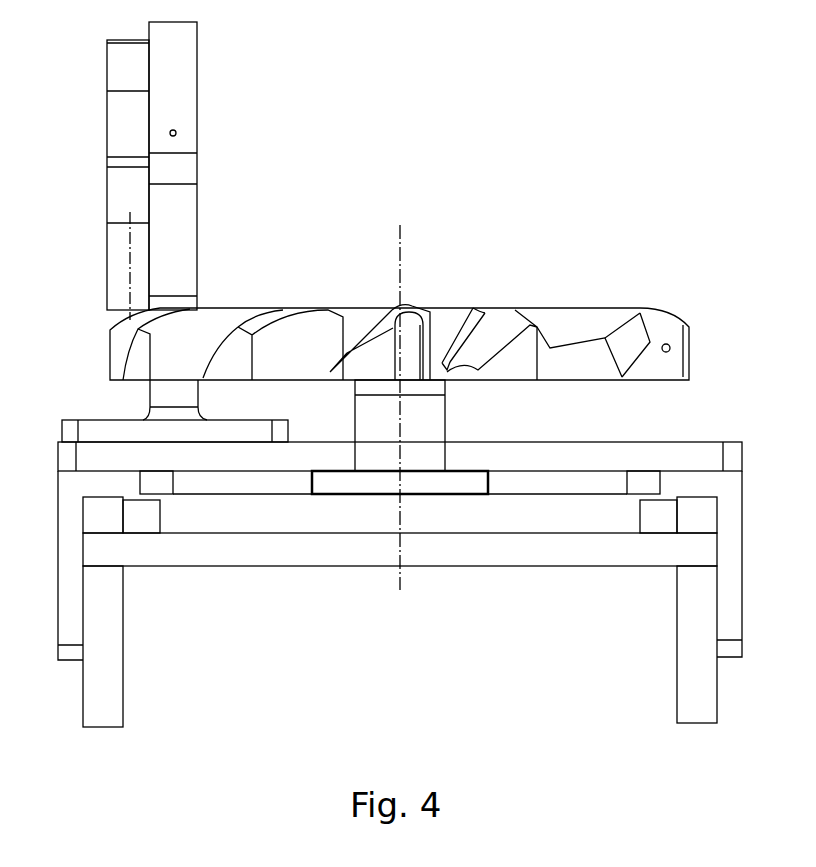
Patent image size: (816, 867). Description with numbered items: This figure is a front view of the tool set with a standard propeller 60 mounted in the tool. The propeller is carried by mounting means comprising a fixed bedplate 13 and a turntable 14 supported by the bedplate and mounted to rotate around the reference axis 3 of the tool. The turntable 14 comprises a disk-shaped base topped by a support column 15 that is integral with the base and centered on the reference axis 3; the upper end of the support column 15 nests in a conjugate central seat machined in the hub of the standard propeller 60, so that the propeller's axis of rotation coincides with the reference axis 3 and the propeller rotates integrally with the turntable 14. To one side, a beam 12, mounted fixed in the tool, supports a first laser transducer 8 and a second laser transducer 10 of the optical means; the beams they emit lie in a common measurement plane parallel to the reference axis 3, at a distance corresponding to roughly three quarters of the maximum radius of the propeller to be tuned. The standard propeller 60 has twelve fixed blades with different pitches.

The reference axis 3 is at (398, 248).
The first laser transducer 8 is at (122, 131).
The second laser transducer 10 is at (118, 272).
The beam 12 is at (185, 70).
The fixed bedplate 13 is at (705, 545).
The turntable 14 is at (500, 522).
The support column 15 is at (420, 413).
The standard propeller 60 is at (668, 328).